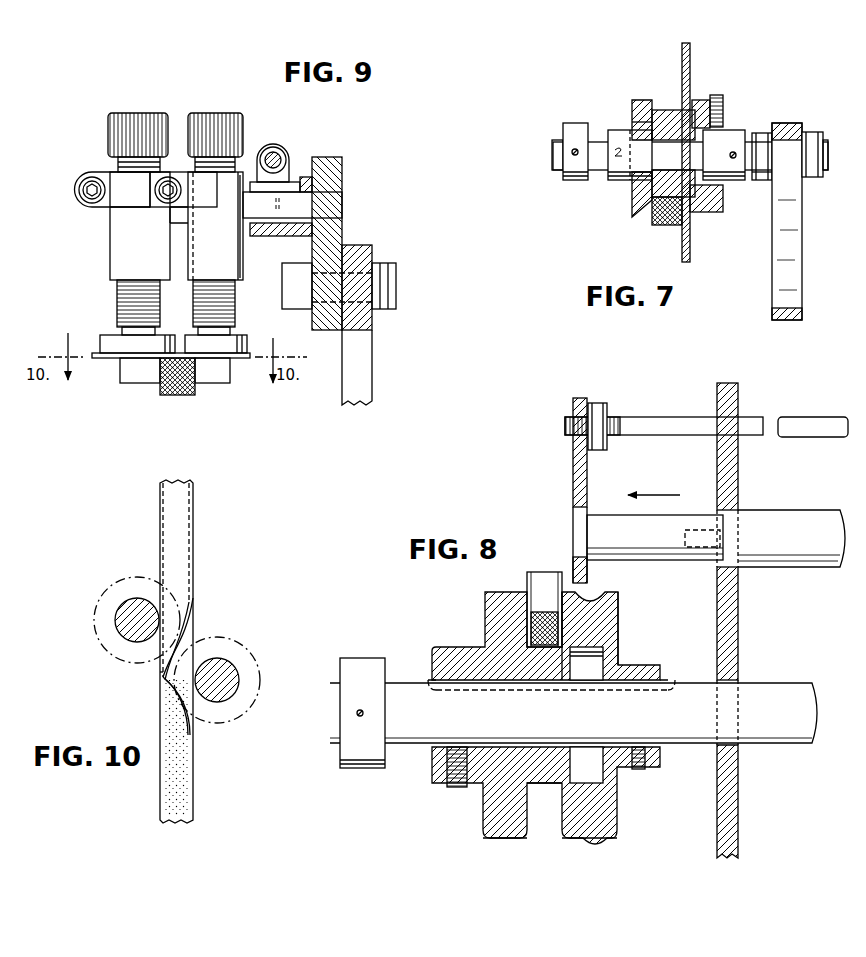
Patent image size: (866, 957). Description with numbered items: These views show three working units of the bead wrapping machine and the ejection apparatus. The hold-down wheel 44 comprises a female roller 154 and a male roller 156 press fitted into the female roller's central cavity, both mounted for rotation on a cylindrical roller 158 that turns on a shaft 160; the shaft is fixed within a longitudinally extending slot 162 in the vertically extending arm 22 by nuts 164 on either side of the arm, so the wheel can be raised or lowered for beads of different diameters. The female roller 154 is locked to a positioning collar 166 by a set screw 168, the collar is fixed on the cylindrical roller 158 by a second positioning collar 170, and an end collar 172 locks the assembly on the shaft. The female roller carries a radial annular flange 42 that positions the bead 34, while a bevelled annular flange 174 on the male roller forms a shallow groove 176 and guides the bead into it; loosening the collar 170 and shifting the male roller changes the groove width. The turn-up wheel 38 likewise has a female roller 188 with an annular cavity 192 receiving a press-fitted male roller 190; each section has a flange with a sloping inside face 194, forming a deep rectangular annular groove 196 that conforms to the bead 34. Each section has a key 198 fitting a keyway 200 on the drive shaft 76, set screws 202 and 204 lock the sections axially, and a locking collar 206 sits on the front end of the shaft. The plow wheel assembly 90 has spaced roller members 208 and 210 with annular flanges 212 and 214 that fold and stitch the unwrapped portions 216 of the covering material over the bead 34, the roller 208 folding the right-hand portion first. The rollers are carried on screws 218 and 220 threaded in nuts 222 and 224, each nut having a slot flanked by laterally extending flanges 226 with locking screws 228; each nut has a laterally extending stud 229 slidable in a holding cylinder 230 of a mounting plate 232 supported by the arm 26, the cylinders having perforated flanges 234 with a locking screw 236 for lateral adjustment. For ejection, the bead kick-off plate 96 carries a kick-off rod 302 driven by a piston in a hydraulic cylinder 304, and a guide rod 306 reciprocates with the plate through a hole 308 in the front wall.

In FIG. 7, the vertically extending arm 22 is at (802, 312).
In FIG. 9, the vertically extending arm 26 is at (370, 322).
In FIG. 7, the bead 34 is at (665, 228).
In FIG. 8, the bead 34 is at (541, 612).
In FIG. 10, the bead 34 is at (178, 815).
In FIG. 8, the turn-up wheel 38 is at (430, 644).
In FIG. 7, the annular flange 42 is at (688, 262).
In FIG. 7, the hold-down wheel 44 is at (603, 236).
In FIG. 8, the drive shaft 76 is at (792, 690).
In FIG. 9, the plow wheel assembly 90 is at (106, 113).
In FIG. 8, the bead kick-off plate 96 is at (586, 480).
In FIG. 7, the female roller 154 is at (718, 210).
In FIG. 7, the male roller 156 is at (640, 122).
In FIG. 7, the cylindrical roller 158 is at (663, 160).
In FIG. 7, the shaft 160 is at (818, 152).
In FIG. 7, the longitudinally extending slot 162 is at (797, 268).
In FIG. 7, the nuts 164 is at (762, 178).
In FIG. 7, the positioning collar 166 is at (733, 135).
In FIG. 7, the set screw 168 is at (716, 101).
In FIG. 7, the second positioning collar 170 is at (620, 182).
In FIG. 7, the end collar 172 is at (573, 182).
In FIG. 7, the bevelled annular flange 174 is at (640, 104).
In FIG. 7, the shallow groove 176 is at (672, 112).
In FIG. 8, the female roller 188 is at (605, 636).
In FIG. 8, the male roller 190 is at (446, 657).
In FIG. 8, the annular cavity 192 is at (605, 780).
In FIG. 8, the sloping inside face 194 is at (566, 832).
In FIG. 8, the annular groove 196 is at (545, 790).
In FIG. 8, the key 198 is at (428, 680).
In FIG. 8, the keyway 200 is at (680, 688).
In FIG. 8, the set screw 202 is at (640, 770).
In FIG. 8, the set screw 204 is at (452, 790).
In FIG. 8, the locking collar 206 is at (368, 770).
In FIG. 9, the roller member 208 is at (216, 378).
In FIG. 10, the roller member 208 is at (226, 702).
In FIG. 9, the roller member 210 is at (132, 378).
In FIG. 10, the roller member 210 is at (125, 640).
In FIG. 9, the annular flange 212 is at (250, 353).
In FIG. 10, the annular flange 212 is at (228, 656).
In FIG. 9, the annular flange 214 is at (93, 352).
In FIG. 10, the annular flange 214 is at (160, 672).
In FIG. 8, the unwrapped portions 216 is at (562, 595).
In FIG. 10, the unwrapped portions 216 is at (194, 790).
In FIG. 9, the screw 218 is at (232, 308).
In FIG. 9, the screw 220 is at (125, 305).
In FIG. 9, the nut 222 is at (232, 253).
In FIG. 9, the nut 224 is at (112, 253).
In FIG. 9, the laterally extending flanges 226 is at (102, 172).
In FIG. 9, the locking screws 228 is at (78, 192).
In FIG. 9, the laterally extending stud 229 is at (340, 205).
In FIG. 9, the holding cylinder 230 is at (316, 162).
In FIG. 9, the mounting plate 232 is at (338, 248).
In FIG. 9, the perforated flanges 234 is at (292, 182).
In FIG. 9, the locking screw 236 is at (268, 148).
In FIG. 8, the kick-off rod 302 is at (660, 553).
In FIG. 8, the hydraulic cylinder 304 is at (760, 513).
In FIG. 8, the guide rod 306 is at (656, 420).
In FIG. 8, the hole 308 is at (717, 418).